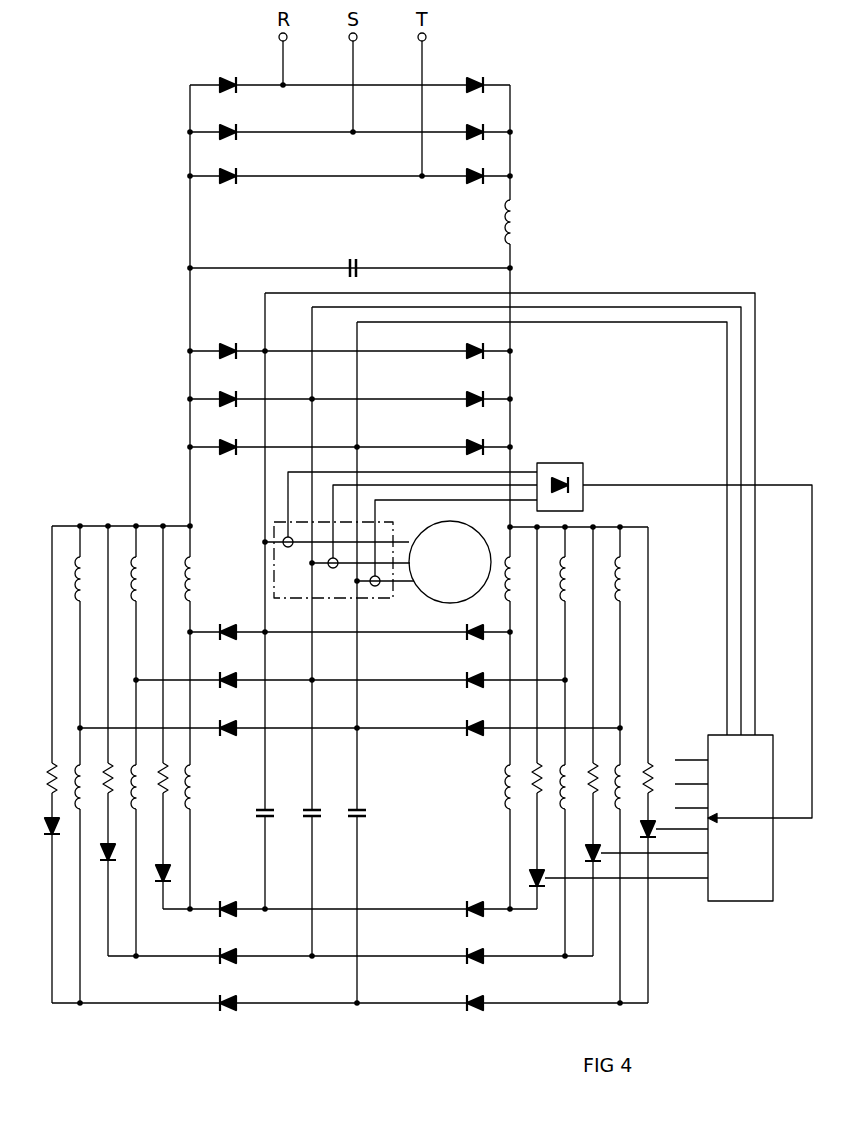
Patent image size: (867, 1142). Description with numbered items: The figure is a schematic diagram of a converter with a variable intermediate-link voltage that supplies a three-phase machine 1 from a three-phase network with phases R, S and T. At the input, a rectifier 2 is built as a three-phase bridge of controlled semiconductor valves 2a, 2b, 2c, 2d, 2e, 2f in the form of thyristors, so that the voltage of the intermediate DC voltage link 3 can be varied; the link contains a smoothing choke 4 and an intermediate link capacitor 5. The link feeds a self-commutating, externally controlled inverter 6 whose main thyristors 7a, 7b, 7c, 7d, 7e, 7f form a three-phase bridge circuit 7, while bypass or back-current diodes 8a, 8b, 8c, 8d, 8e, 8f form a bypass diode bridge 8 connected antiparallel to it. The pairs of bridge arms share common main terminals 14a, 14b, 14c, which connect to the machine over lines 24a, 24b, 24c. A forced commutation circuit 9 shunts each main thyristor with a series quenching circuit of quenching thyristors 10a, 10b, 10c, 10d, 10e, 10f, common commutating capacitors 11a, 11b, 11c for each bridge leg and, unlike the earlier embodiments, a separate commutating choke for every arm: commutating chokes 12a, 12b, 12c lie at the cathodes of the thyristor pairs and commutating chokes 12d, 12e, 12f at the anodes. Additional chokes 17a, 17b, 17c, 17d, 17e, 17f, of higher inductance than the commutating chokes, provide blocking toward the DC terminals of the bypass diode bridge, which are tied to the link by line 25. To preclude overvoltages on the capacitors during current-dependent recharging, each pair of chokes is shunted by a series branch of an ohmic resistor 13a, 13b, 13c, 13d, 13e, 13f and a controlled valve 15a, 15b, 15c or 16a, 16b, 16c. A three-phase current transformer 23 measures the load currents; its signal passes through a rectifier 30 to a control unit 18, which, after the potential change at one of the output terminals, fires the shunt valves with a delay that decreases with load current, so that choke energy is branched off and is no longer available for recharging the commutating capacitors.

The three-phase machine 1 is at (450, 562).
The rectifier 2 is at (348, 172).
The controlled semiconductor valve 2a is at (232, 92).
The controlled semiconductor valve 2b is at (232, 139).
The controlled semiconductor valve 2c is at (228, 185).
The controlled semiconductor valve 2d is at (466, 81).
The controlled semiconductor valve 2e is at (466, 129).
The controlled semiconductor valve 2f is at (466, 174).
The intermediate DC voltage link 3 is at (342, 226).
The smoothing choke 4 is at (505, 220).
The intermediate link capacitor 5 is at (357, 259).
The inverter 6 is at (232, 534).
The three-phase bridge circuit 7 is at (338, 669).
The main thyristor 7a is at (234, 628).
The main thyristor 7b is at (234, 676).
The main thyristor 7c is at (234, 724).
The main thyristor 7d is at (479, 628).
The main thyristor 7e is at (467, 678).
The main thyristor 7f is at (467, 726).
The bypass diode bridge 8 is at (290, 434).
The bypass diode 8a is at (224, 350).
The bypass diode 8b is at (224, 398).
The bypass diode 8c is at (224, 446).
The bypass diode 8d is at (463, 350).
The bypass diode 8e is at (463, 398).
The bypass diode 8f is at (463, 446).
The forced commutation circuit 9 is at (338, 946).
The quenching thyristor 10a is at (236, 917).
The quenching thyristor 10b is at (236, 964).
The quenching thyristor 10c is at (236, 1011).
The quenching thyristor 10d is at (468, 917).
The quenching thyristor 10e is at (468, 964).
The quenching thyristor 10f is at (468, 1011).
The commutating capacitor 11a is at (270, 812).
The commutating capacitor 11b is at (317, 812).
The commutating capacitor 11c is at (362, 812).
The commutating choke 12a is at (194, 790).
The commutating choke 12b is at (140, 795).
The commutating choke 12c is at (78, 778).
The commutating choke 12d is at (503, 778).
The commutating choke 12e is at (560, 778).
The commutating choke 12f is at (624, 772).
The ohmic resistor 13a is at (167, 768).
The ohmic resistor 13b is at (104, 768).
The ohmic resistor 13c is at (50, 780).
The ohmic resistor 13d is at (535, 792).
The ohmic resistor 13e is at (590, 798).
The ohmic resistor 13f is at (650, 770).
The main terminal 14a is at (268, 350).
The main terminal 14b is at (315, 398).
The main terminal 14c is at (361, 447).
The controlled valve 15a is at (160, 884).
The controlled valve 15b is at (106, 864).
The controlled valve 15c is at (50, 838).
The controlled valve 16a is at (540, 890).
The controlled valve 16b is at (597, 866).
The controlled valve 16c is at (652, 845).
The additional choke 17a is at (196, 577).
The additional choke 17b is at (141, 565).
The additional choke 17c is at (85, 565).
The additional choke 17d is at (512, 560).
The additional choke 17e is at (568, 565).
The additional choke 17f is at (626, 580).
The control unit 18 is at (737, 902).
The three-phase current transformer 23 is at (382, 598).
The phase line 24a is at (264, 349).
The phase line 24b is at (310, 397).
The phase line 24c is at (355, 445).
The DC bus line 25 is at (513, 285).
The rectifier 30 is at (560, 463).